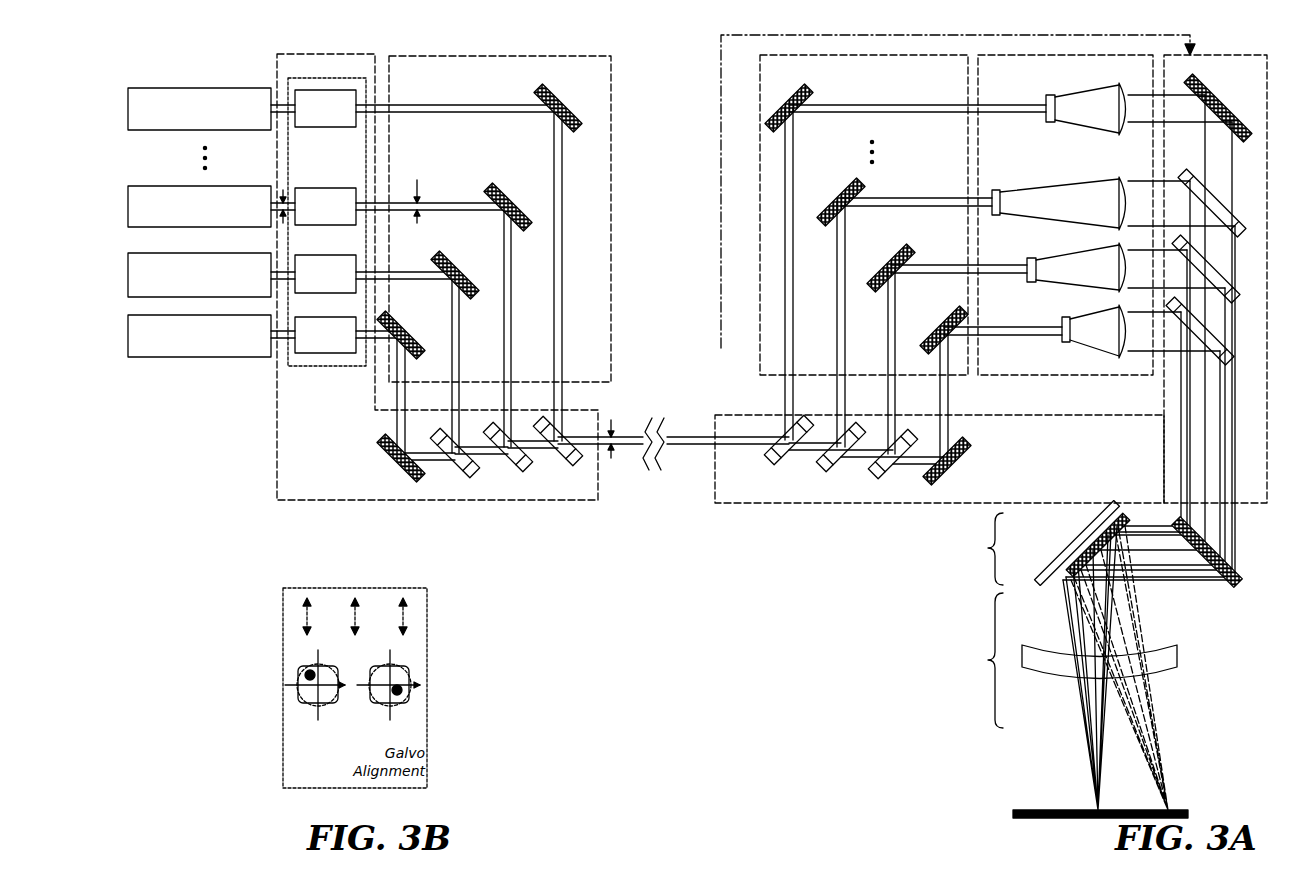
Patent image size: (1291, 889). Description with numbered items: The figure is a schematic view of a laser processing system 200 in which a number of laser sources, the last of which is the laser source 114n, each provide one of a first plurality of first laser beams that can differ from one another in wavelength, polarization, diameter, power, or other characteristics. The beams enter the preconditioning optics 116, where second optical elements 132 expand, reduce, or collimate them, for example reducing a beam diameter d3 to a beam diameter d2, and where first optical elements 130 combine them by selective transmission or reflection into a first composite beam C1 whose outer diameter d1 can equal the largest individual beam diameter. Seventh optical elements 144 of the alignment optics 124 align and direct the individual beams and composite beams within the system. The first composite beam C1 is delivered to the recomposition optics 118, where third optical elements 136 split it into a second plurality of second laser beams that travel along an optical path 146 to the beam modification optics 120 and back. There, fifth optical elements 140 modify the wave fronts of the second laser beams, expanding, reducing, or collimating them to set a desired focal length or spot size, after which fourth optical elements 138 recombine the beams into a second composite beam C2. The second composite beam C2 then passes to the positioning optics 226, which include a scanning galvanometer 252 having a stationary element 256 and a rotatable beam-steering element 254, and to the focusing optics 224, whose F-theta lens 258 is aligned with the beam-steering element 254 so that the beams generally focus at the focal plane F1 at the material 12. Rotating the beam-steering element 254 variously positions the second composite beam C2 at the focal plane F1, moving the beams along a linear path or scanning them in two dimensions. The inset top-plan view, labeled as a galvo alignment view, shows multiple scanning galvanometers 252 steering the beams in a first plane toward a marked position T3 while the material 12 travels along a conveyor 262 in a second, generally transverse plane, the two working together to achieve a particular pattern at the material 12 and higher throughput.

In FIG. 3A, the laser source 114n is at (199, 109).
In FIG. 3A, the preconditioning optics 116 is at (277, 385).
In FIG. 3A, the second optical elements 132 is at (366, 366).
In FIG. 3A, the seventh optical elements 144 is at (548, 98).
In FIG. 3A, the first optical elements 130 is at (462, 470).
In FIG. 3A, the alignment optics 124 is at (760, 370).
In FIG. 3A, the optical path 146 is at (721, 150).
In FIG. 3A, the recomposition optics 118 is at (940, 503).
In FIG. 3A, the third optical elements 136 is at (778, 460).
In FIG. 3A, the beam modification optics 120 is at (1040, 375).
In FIG. 3A, the fifth optical elements 140 is at (1122, 135).
In FIG. 3A, the fourth optical elements 138 is at (1246, 130).
In FIG. 3A, the stationary element 256 is at (1214, 550).
In FIG. 3A, the scanning galvanometer 252 is at (1085, 545).
In FIG. 3B, the scanning galvanometer 252 is at (300, 677).
In FIG. 3A, the beam-steering element 254 is at (1068, 578).
In FIG. 3A, the positioning optics 226 is at (974, 549).
In FIG. 3B, the positioning optics 226 is at (435, 627).
In FIG. 3A, the focusing optics 224 is at (974, 660).
In FIG. 3A, the F-theta lens 258 is at (1177, 655).
In FIG. 3A, the material 12 is at (1014, 810).
In FIG. 3A, the laser processing system 200 is at (245, 492).
In FIG. 3B, the conveyor 262 is at (307, 610).
In FIG. 3A, the focal plane F1 is at (987, 817).
In FIG. 3B, the target position T3 is at (308, 678).
In FIG. 3A, the first composite beam C1 is at (662, 446).
In FIG. 3A, the second composite beam C2 is at (1170, 627).
In FIG. 3A, the outer diameter of the first composite beam d1 is at (611, 420).
In FIG. 3A, the beam diameter d2 is at (417, 180).
In FIG. 3A, the beam diameter d3 is at (283, 190).